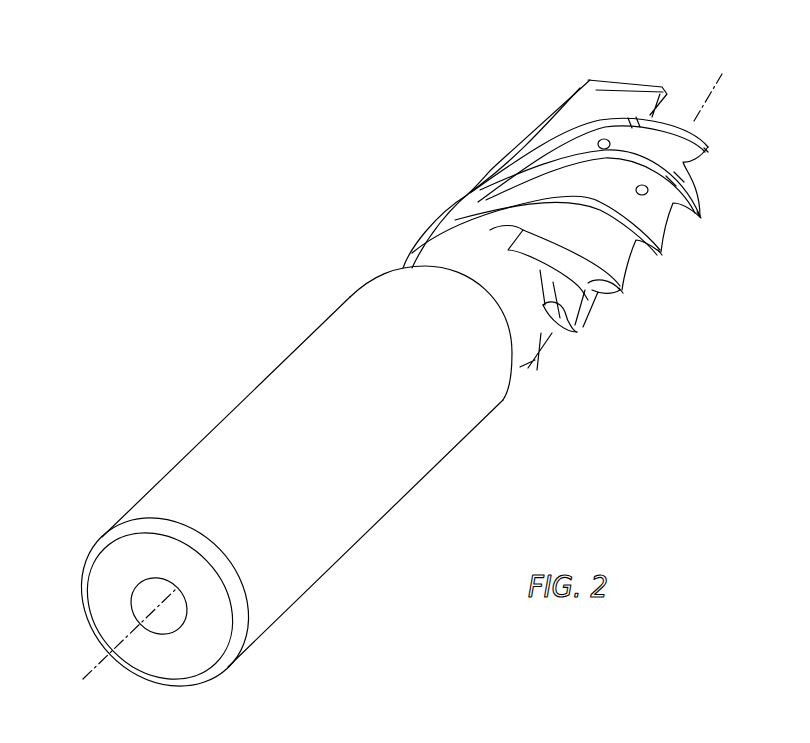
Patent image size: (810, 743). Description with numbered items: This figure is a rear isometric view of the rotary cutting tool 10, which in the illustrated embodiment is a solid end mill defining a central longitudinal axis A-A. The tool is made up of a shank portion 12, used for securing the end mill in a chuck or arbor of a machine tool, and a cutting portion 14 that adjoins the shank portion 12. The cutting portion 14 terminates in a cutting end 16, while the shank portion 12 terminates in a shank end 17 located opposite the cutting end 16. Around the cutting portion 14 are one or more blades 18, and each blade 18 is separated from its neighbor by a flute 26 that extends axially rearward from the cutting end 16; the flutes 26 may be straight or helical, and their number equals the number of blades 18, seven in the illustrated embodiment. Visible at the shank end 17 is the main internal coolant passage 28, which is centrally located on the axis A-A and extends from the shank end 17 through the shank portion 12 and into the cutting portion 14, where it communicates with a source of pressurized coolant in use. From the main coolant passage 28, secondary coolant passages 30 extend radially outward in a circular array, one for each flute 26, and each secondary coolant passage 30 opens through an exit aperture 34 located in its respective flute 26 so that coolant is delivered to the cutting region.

The rotary cutting tool 10 is at (215, 257).
The shank portion 12 is at (277, 493).
The cutting portion 14 is at (577, 205).
The cutting end 16 is at (698, 120).
The shank end 17 is at (118, 565).
The blade 18 is at (714, 147).
The flute 26 is at (688, 164).
The main internal coolant passage 28 is at (153, 598).
The secondary coolant passage 30 is at (648, 197).
The exit aperture 34 is at (637, 192).